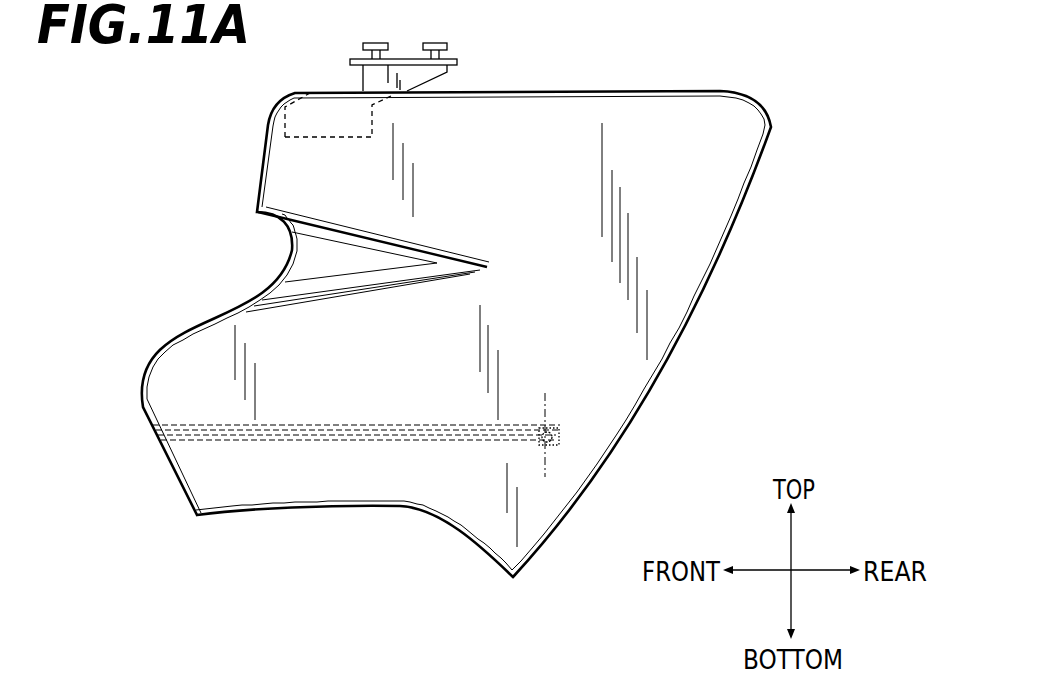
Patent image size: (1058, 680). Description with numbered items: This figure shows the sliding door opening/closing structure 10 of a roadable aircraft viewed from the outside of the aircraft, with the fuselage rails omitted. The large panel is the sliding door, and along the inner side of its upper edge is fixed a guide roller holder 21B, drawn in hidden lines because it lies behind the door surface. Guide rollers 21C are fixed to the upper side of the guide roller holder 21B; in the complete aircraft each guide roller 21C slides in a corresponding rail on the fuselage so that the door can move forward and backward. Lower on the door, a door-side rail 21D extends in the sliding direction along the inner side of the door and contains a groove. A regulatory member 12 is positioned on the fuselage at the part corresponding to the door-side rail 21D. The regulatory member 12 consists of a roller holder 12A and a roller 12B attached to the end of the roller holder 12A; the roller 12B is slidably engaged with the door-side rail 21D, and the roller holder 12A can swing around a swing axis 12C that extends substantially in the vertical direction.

The sliding door opening/closing structure 10 is at (203, 218).
The regulatory member 12 is at (616, 459).
The roller holder 12A is at (553, 443).
The roller 12B is at (557, 437).
The swing axis 12C is at (566, 445).
The guide roller holder 21B is at (320, 107).
The guide rollers 21C is at (440, 45).
The door-side rail 21D is at (230, 435).